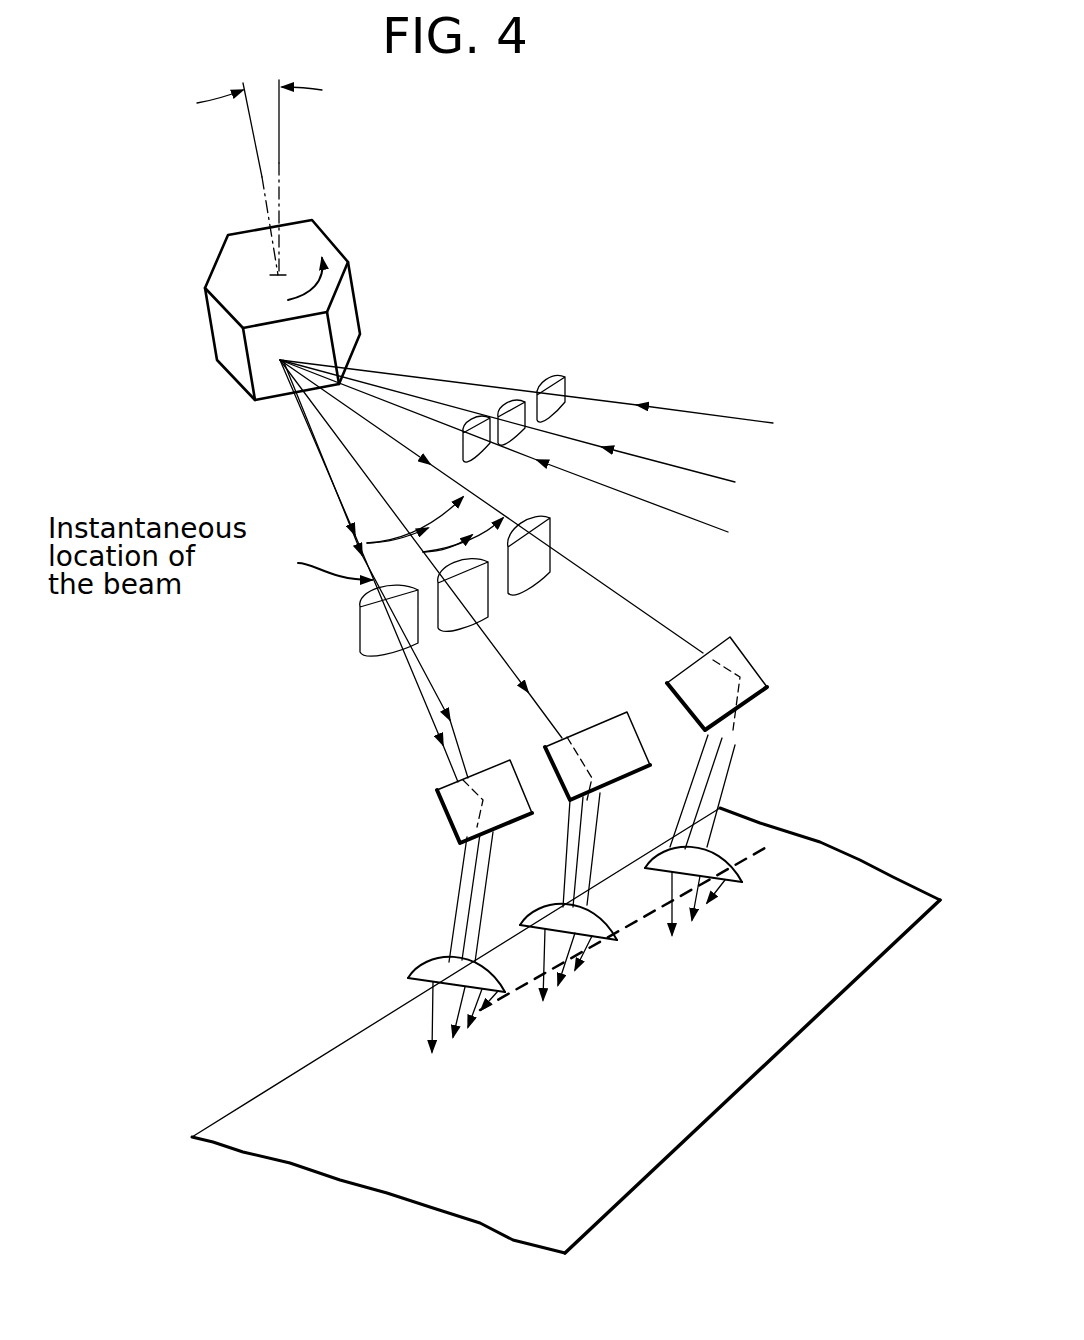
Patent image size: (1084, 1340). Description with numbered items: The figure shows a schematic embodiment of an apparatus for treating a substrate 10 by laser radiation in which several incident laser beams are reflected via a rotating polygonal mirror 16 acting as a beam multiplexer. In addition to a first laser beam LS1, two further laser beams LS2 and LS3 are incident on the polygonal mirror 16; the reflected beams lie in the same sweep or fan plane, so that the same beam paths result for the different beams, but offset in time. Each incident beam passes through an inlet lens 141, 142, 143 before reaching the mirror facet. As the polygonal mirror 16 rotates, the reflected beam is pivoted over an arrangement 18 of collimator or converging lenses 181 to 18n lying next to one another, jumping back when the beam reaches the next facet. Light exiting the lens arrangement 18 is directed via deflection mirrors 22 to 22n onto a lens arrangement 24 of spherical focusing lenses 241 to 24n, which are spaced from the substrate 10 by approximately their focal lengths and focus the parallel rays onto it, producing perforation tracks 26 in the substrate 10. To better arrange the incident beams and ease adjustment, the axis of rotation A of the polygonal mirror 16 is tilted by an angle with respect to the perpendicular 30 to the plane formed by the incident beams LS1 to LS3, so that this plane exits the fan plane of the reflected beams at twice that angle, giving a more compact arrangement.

The substrate 10 is at (660, 1127).
The rotating polygonal mirror 16 is at (340, 246).
The perpendicular 30 is at (280, 153).
The axis of rotation A is at (252, 142).
The first laser beam LS1 is at (703, 520).
The further laser beam LS2 is at (733, 482).
The further laser beam LS3 is at (713, 412).
The cylindrical lens 14_1 141 is at (477, 420).
The cylindrical lens 14_2 142 is at (521, 401).
The cylindrical lens 14_3 143 is at (563, 378).
The arrangement of collimator lenses 18 is at (498, 600).
The converging lens 181 is at (377, 643).
The converging lens 18n is at (550, 537).
The deflection mirror 22 is at (448, 800).
The deflecting mirror 22_n 22n is at (747, 683).
The lens arrangement 24 is at (554, 920).
The focusing lens 241 is at (433, 970).
The focusing lens 24n is at (710, 868).
The perforation track 26 is at (478, 1007).